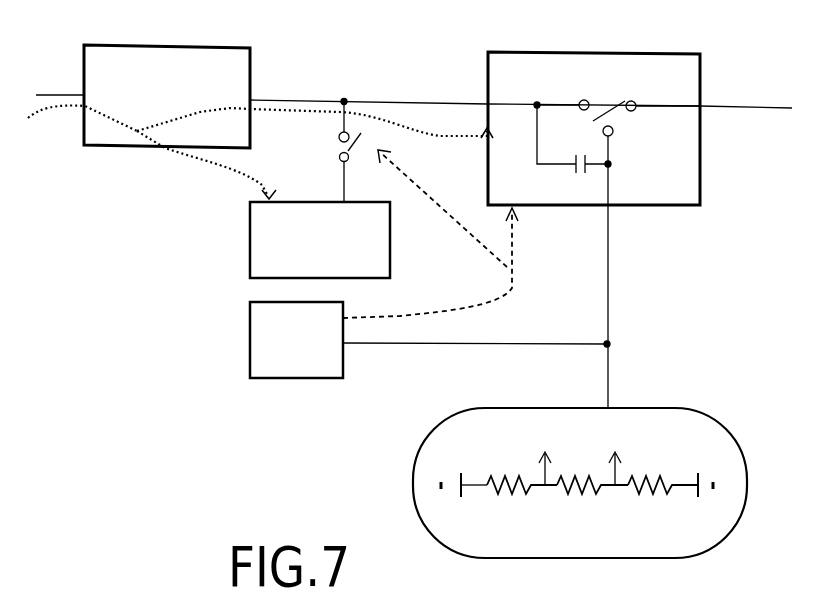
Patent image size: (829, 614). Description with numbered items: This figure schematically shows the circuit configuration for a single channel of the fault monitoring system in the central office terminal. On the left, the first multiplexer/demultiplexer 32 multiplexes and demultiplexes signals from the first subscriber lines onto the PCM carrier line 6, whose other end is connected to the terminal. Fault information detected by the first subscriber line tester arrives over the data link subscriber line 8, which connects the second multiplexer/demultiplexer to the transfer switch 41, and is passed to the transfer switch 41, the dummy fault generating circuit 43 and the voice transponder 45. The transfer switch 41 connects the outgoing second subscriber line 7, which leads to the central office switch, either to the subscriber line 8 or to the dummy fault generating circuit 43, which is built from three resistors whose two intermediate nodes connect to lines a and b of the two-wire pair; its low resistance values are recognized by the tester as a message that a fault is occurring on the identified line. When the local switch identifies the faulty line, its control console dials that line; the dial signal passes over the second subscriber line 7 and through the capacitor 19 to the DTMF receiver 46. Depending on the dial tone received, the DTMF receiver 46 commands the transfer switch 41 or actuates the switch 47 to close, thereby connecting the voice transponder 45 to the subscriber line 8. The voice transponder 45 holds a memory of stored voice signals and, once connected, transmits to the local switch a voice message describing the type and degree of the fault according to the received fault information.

The carrier line 6 is at (55, 92).
The second subscriber line 7 is at (728, 104).
The subscriber line 8 is at (375, 87).
The capacitor 19 is at (565, 188).
The first multiplexer/demultiplexer 32 is at (193, 43).
The transfer switch 41 is at (632, 50).
The dummy fault generating circuit 43 is at (668, 408).
The voice transponder 45 is at (246, 226).
The DTMF receiver 46 is at (246, 330).
The switch 47 is at (329, 148).